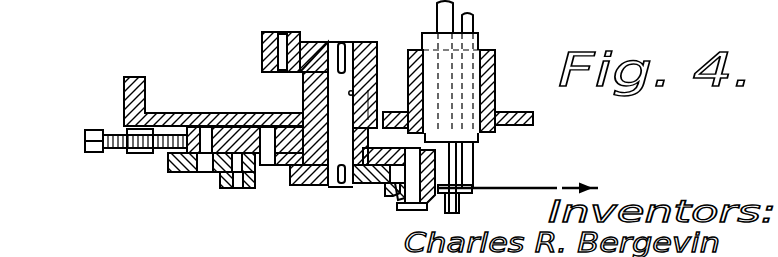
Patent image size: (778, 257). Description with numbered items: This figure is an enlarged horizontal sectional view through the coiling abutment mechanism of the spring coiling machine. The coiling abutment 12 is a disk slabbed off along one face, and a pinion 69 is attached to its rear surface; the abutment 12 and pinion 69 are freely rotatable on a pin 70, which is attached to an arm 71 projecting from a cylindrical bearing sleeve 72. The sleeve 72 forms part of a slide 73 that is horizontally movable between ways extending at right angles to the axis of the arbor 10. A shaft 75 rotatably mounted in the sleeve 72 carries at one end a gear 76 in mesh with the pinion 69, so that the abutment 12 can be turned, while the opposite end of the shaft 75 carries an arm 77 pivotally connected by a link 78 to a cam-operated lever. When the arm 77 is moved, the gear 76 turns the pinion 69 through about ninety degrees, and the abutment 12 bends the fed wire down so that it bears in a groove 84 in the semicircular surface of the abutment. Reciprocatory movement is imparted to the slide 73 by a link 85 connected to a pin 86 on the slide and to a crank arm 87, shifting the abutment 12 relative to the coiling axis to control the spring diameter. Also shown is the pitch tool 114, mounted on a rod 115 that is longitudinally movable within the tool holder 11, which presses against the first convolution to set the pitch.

The arbor 10 is at (446, 170).
The tool holder 11 is at (470, 41).
The coiling abutment 12 is at (432, 195).
The pinion 69 is at (392, 194).
The pin 70 is at (411, 203).
The arm 71 is at (384, 160).
The cylindrical bearing sleeve 72 is at (370, 106).
The slide 73 is at (273, 150).
The shaft 75 is at (358, 92).
The gear 76 is at (362, 180).
The arm 77 is at (312, 44).
The link 78 is at (266, 35).
The groove 84 is at (385, 188).
The link 85 is at (168, 160).
The pin 86 is at (205, 165).
The crank arm 87 is at (230, 180).
The pitch tool 114 is at (466, 195).
The rod 115 is at (476, 142).